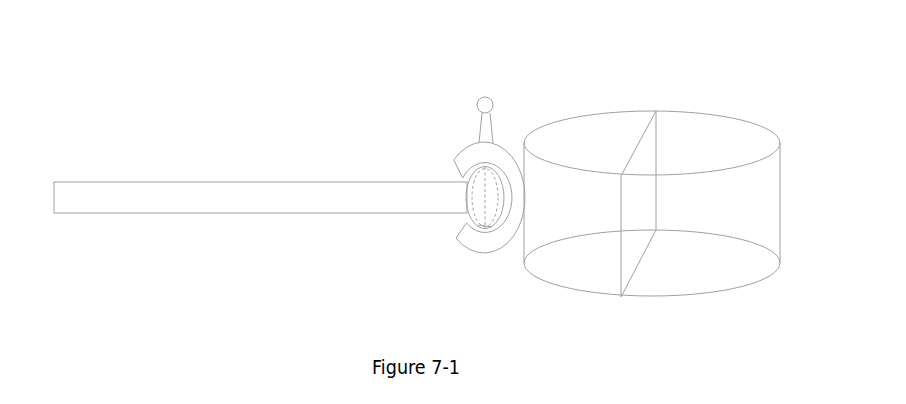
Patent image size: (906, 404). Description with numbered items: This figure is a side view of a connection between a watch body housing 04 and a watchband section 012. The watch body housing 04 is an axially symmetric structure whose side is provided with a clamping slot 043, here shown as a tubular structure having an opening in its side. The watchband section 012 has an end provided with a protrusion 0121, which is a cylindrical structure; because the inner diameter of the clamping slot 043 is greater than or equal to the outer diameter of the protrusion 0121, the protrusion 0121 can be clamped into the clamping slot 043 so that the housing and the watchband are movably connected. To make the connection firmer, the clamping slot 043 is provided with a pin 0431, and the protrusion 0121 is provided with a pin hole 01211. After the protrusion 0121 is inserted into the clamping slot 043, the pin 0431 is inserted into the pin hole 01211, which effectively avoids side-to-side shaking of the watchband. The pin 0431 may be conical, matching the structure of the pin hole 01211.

The watchband section 012 is at (227, 181).
The protrusion 0121 is at (467, 195).
The pin hole 01211 is at (490, 227).
The clamping slot 043 is at (465, 248).
The pin 0431 is at (493, 113).
The watch body housing 04 is at (610, 110).